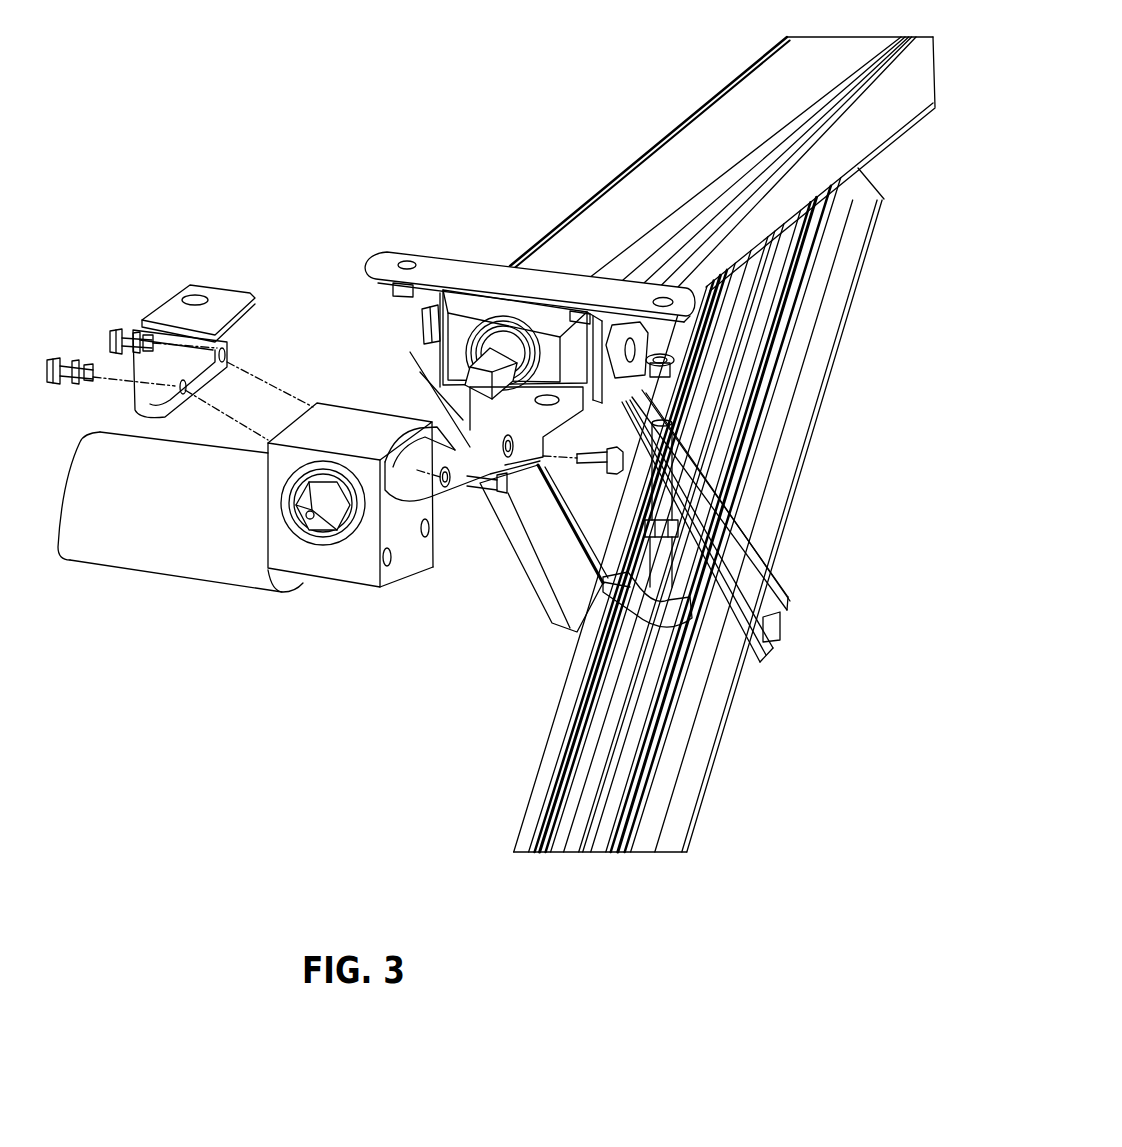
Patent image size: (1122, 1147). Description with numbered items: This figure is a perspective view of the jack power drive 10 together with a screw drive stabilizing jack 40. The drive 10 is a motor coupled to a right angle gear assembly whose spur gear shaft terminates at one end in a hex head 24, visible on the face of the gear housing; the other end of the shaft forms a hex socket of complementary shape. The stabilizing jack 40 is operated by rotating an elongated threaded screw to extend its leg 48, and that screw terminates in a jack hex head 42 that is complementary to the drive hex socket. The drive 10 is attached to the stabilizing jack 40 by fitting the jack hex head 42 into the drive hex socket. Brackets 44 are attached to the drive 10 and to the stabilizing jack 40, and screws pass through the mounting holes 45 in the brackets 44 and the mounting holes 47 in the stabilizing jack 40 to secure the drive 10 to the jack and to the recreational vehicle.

The jack power drive 10 is at (237, 592).
The hex head 24 is at (318, 533).
The stabilizing jack 40 is at (657, 108).
The jack hex head 42 is at (473, 367).
The brackets 44 is at (463, 492).
The mounting holes 45 is at (192, 295).
The mounting holes 47 is at (403, 262).
The leg 48 is at (708, 768).